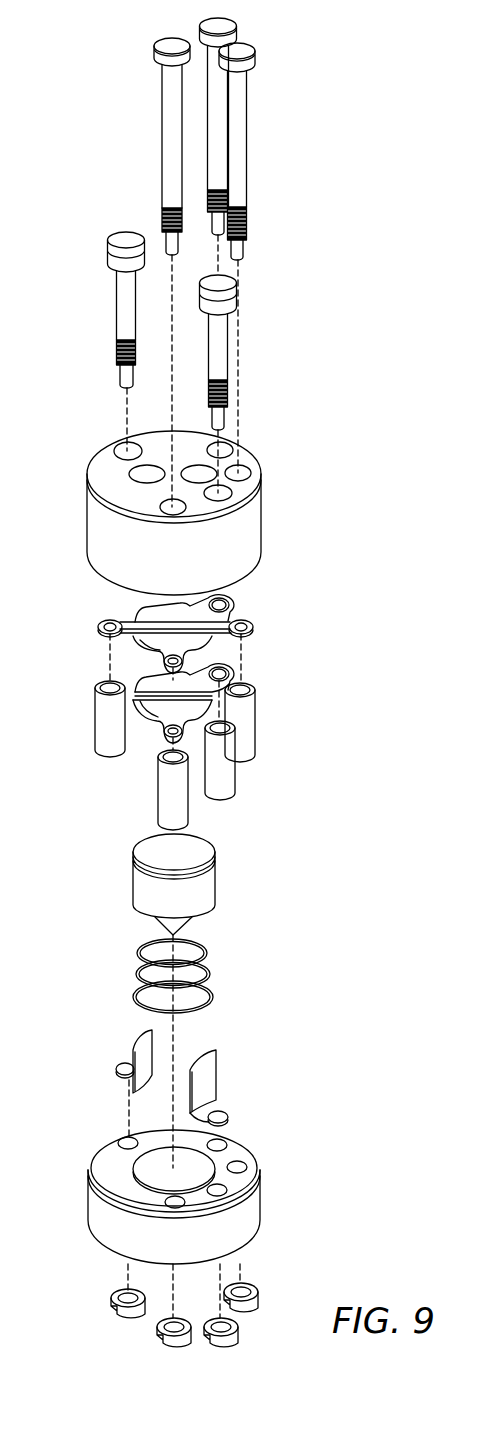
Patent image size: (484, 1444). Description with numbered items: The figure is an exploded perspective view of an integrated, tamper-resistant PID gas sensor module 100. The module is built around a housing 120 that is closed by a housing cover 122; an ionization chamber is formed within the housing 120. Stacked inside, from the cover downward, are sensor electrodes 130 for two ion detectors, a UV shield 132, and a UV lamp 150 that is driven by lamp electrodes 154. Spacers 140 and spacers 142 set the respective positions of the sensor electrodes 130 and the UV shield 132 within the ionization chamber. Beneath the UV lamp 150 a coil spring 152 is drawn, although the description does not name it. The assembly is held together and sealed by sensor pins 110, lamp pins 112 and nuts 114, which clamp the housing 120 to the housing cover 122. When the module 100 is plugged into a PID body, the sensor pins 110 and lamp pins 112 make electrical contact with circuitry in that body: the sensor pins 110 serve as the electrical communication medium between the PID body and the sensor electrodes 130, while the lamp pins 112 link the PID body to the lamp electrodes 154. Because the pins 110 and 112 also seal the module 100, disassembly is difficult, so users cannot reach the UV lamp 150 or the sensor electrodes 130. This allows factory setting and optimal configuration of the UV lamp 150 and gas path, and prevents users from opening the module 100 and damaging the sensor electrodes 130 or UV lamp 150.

The sensor module 100 is at (238, 682).
The sensor pins 110 is at (163, 147).
The lamp pins 112 is at (120, 325).
The nuts 114 is at (110, 1302).
The housing 120 is at (88, 1217).
The housing cover 122 is at (92, 548).
The sensor electrodes 130 is at (254, 628).
The UV shield 132 is at (152, 708).
The spacers 140 is at (253, 730).
The spacers 142 is at (233, 780).
The UV lamp 150 is at (136, 898).
The spring 152 is at (130, 997).
The lamp electrodes 154 is at (117, 1070).